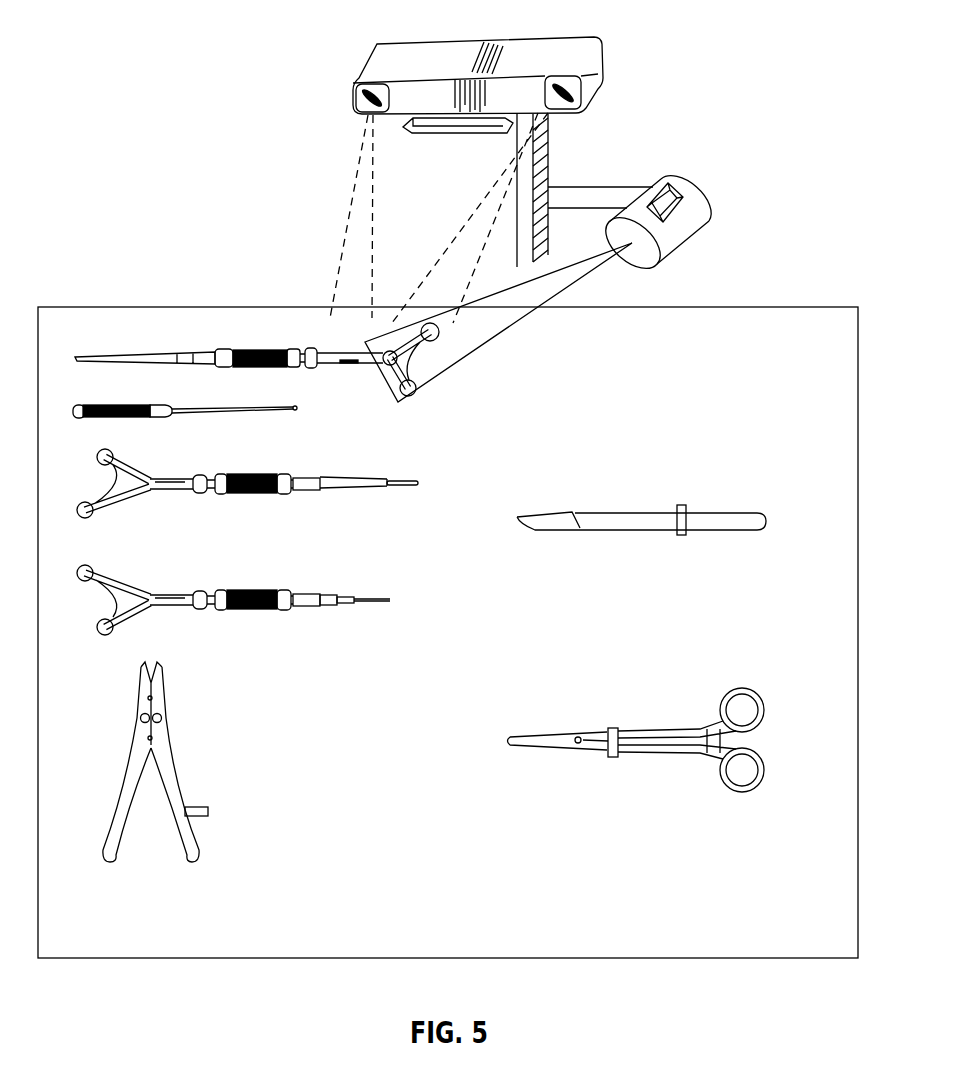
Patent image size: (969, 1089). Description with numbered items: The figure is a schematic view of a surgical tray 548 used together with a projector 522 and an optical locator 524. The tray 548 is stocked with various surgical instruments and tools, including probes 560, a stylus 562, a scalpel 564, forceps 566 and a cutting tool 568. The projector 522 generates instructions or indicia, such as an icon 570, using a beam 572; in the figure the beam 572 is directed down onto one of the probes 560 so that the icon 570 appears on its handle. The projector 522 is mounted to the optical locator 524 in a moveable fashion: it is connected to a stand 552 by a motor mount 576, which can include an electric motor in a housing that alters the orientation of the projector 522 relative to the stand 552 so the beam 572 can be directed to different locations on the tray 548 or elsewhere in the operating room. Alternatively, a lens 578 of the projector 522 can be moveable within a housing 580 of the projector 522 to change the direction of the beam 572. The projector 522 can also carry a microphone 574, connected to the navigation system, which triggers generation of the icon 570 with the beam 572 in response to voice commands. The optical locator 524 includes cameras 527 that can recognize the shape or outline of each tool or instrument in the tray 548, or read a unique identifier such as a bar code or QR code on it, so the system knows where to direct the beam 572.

The optical locator 524 is at (375, 52).
The cameras 527 is at (355, 105).
The stand 552 is at (533, 188).
The motor mount 576 is at (587, 198).
The housing 580 is at (682, 186).
The microphone 574 is at (684, 226).
The projector 522 is at (689, 226).
The lens 578 is at (650, 260).
The surgical tray 548 is at (792, 306).
The probes 560 is at (308, 352).
The stylus 562 is at (297, 410).
The scalpel 564 is at (683, 504).
The forceps 566 is at (611, 758).
The cutting tool 568 is at (209, 811).
The icon 570 is at (403, 360).
The beam 572 is at (500, 333).